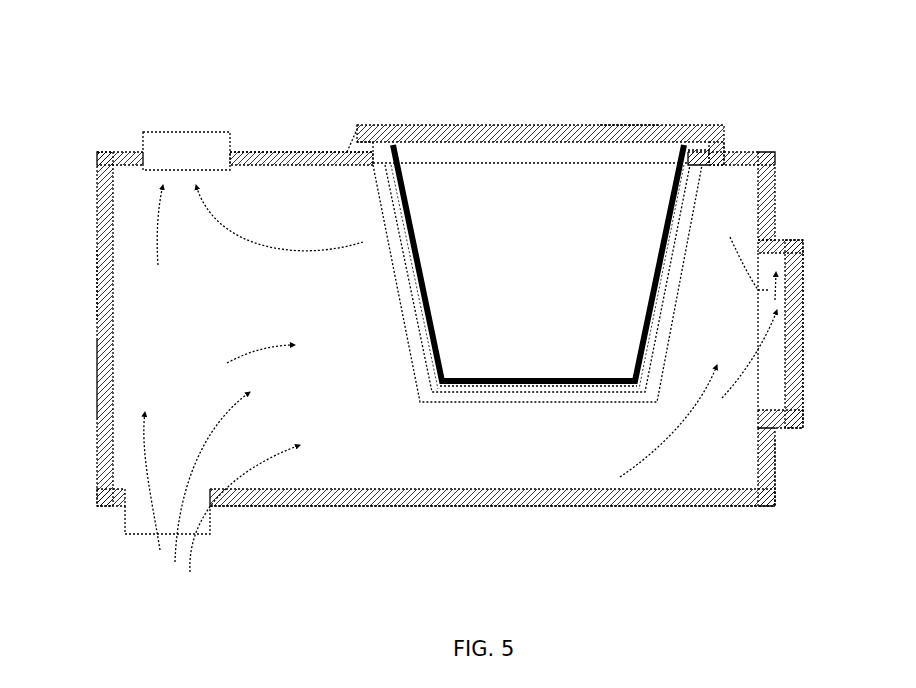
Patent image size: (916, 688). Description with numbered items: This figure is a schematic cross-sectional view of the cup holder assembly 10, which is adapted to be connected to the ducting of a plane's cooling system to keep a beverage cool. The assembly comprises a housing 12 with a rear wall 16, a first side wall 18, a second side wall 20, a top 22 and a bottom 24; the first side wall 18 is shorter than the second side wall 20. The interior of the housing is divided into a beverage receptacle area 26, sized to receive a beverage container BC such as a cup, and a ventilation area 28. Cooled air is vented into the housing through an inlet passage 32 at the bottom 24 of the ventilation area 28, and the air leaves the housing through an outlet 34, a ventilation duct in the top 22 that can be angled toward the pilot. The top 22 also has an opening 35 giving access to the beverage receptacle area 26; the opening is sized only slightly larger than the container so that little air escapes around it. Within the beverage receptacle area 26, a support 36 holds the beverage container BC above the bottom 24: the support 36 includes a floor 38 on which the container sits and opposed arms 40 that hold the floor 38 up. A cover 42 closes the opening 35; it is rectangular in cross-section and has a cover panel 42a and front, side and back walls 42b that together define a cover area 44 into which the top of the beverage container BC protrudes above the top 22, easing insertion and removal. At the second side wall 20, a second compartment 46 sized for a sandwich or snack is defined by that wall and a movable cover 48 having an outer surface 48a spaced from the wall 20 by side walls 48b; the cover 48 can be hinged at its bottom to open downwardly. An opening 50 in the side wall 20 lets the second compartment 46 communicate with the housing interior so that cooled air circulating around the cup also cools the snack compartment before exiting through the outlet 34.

The cup holder assembly 10 is at (432, 67).
The housing 12 is at (810, 152).
The rear wall 16 is at (316, 300).
The first side wall 18 is at (97, 280).
The second side wall 20 is at (772, 482).
The top 22 is at (282, 150).
The bottom 24 is at (315, 506).
The beverage receptacle area 26 is at (547, 453).
The ventilation area 28 is at (140, 352).
The air inlet 32 is at (120, 508).
The outlet 34 is at (133, 130).
The opening 35 is at (505, 125).
The support 36 is at (405, 365).
The floor 38 is at (598, 402).
The opposed arms 40 is at (672, 320).
The cover 42 is at (688, 125).
The cover panel 42a is at (623, 125).
The front, side, and back walls 42b is at (722, 148).
The cover area 44 is at (506, 155).
The second compartment 46 is at (800, 245).
The cover 48 is at (827, 332).
The outer surface 48a is at (803, 375).
The side walls 48b is at (777, 238).
The opening 50 is at (787, 397).
The beverage container BC is at (428, 287).